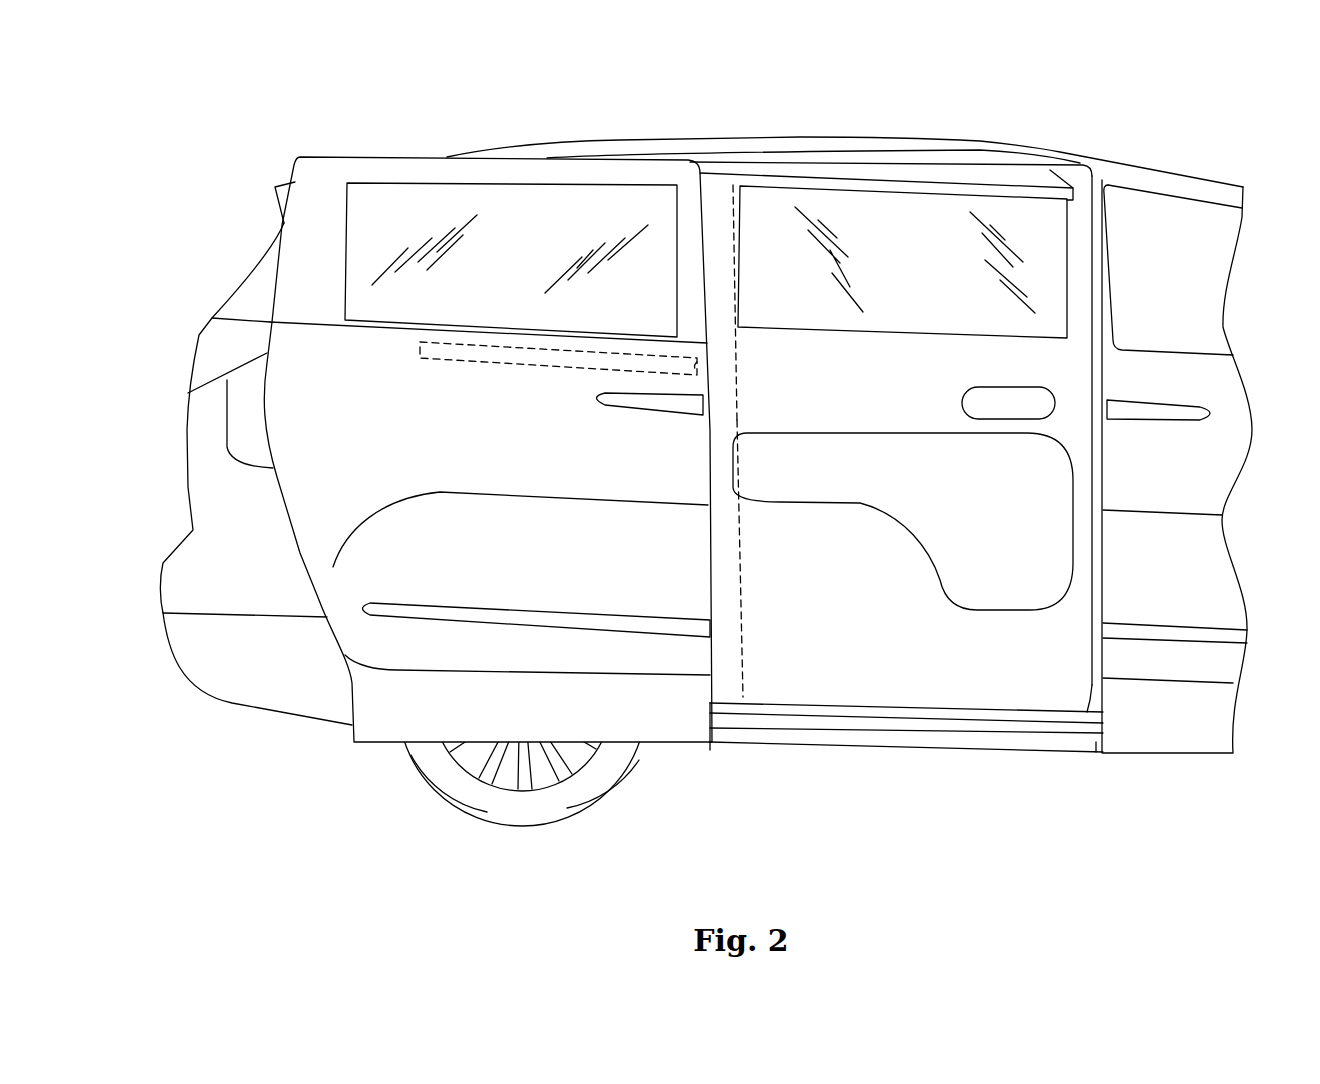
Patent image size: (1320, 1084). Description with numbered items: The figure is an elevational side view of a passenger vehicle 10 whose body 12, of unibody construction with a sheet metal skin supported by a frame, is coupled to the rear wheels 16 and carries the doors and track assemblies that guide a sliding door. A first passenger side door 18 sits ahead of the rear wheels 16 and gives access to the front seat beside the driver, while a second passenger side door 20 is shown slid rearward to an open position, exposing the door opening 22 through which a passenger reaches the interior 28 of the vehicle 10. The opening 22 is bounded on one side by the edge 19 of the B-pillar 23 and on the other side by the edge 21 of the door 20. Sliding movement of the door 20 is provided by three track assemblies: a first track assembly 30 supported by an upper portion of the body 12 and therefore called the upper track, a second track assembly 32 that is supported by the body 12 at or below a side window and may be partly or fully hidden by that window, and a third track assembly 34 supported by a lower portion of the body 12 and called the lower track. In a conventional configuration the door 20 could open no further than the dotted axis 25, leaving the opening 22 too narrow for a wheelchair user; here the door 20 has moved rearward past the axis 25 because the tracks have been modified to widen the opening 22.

The vehicle 10 is at (1200, 131).
The body 12 is at (207, 432).
The rear wheels 16 is at (530, 813).
The first passenger side door 18 is at (1190, 555).
The edge of B-pillar 19 is at (1092, 468).
The second passenger side door 20 is at (323, 182).
The edge of the door 21 is at (718, 540).
The door opening 22 is at (1077, 247).
The B-pillar 23 is at (1092, 653).
The axis 25 is at (745, 630).
The interior 28 is at (890, 395).
The first track assembly 30 is at (894, 185).
The second track assembly 32 is at (513, 363).
The third track assembly 34 is at (990, 737).